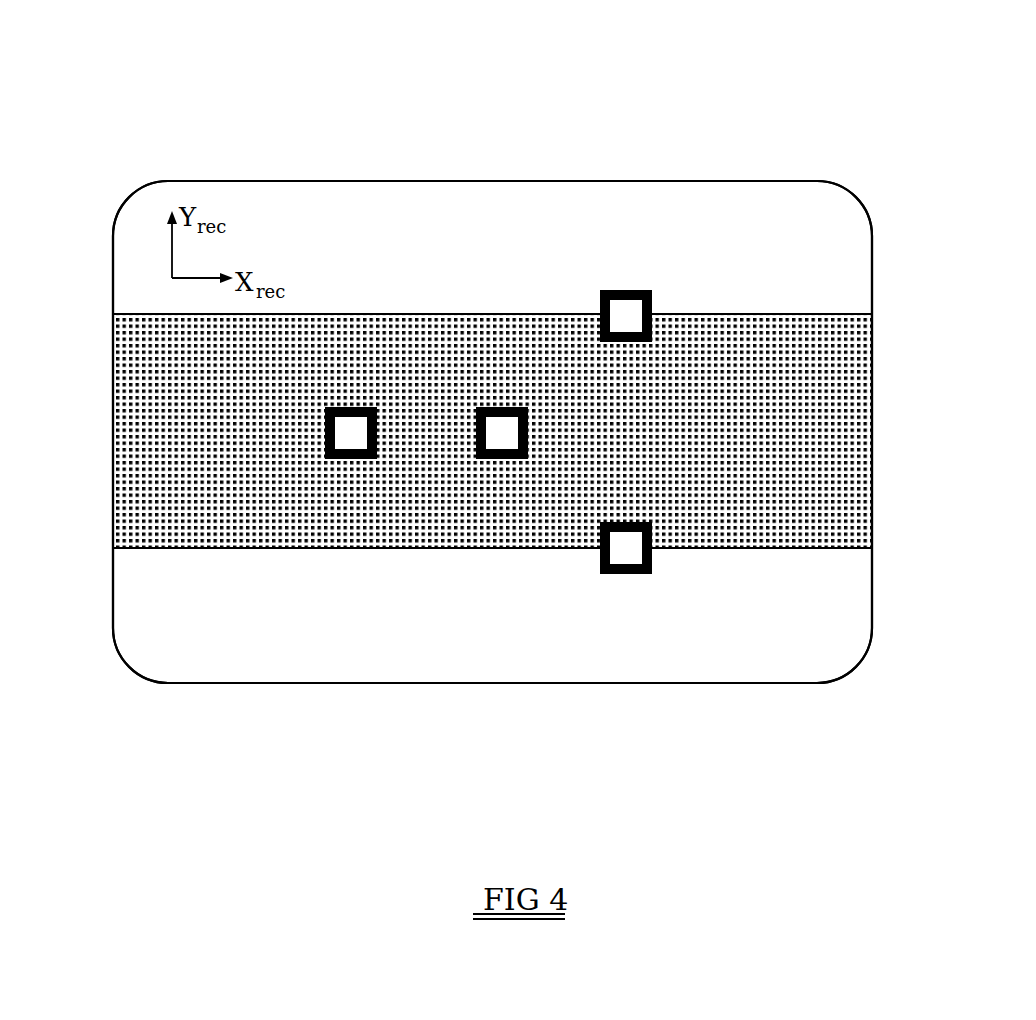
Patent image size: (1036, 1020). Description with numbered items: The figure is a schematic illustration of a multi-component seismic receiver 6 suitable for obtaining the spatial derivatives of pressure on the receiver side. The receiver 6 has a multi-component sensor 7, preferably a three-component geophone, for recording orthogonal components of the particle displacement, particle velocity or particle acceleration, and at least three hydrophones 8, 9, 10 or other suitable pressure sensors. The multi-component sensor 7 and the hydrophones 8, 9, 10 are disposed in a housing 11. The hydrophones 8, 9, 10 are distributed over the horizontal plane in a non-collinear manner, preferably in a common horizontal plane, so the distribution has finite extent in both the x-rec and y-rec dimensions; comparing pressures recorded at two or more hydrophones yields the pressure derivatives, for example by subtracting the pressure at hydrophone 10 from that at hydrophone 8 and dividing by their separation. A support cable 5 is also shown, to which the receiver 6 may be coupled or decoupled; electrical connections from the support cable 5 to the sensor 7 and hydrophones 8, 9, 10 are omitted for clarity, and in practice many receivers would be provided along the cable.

The support cable 5 is at (823, 425).
The seismic receiver 6 is at (852, 120).
The multi-component sensor 7 is at (500, 459).
The hydrophone 8 is at (630, 290).
The hydrophone 9 is at (348, 407).
The hydrophone 10 is at (630, 574).
The housing 11 is at (872, 237).